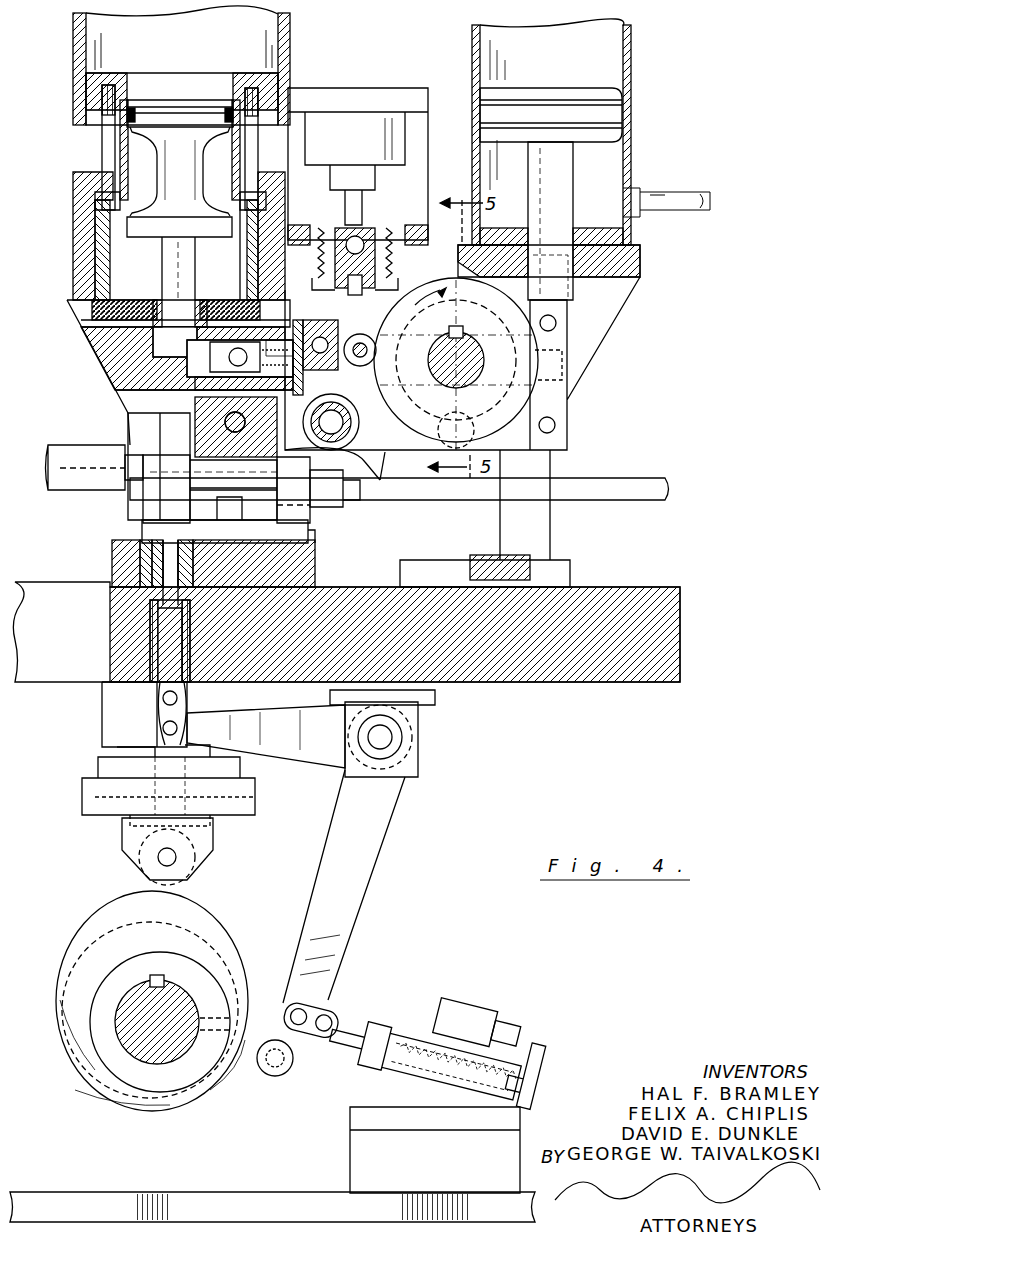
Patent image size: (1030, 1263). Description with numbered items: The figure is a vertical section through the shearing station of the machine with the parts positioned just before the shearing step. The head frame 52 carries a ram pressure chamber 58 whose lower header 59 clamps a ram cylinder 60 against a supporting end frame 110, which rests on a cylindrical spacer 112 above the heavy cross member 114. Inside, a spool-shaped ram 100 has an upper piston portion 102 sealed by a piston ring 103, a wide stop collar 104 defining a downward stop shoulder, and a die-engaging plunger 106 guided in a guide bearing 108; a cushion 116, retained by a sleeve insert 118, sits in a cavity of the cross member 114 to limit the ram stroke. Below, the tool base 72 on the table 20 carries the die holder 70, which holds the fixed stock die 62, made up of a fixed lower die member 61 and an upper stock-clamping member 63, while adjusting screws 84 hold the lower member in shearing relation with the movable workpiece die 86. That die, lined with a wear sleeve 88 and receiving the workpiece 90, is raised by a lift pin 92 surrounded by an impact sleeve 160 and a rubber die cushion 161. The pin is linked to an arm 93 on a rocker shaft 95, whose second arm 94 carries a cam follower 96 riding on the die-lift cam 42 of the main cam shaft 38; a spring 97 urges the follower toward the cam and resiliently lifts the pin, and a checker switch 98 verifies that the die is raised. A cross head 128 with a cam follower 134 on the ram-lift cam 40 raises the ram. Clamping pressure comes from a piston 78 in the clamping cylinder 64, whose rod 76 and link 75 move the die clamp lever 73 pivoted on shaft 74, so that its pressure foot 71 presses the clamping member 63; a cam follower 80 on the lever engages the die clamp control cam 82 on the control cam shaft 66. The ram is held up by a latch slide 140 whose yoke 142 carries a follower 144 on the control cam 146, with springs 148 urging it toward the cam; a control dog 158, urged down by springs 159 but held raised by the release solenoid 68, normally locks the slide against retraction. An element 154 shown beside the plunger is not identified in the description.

The table 20 is at (665, 652).
The main cam shaft 38 is at (160, 1010).
The ram-lift cam 40 is at (210, 917).
The die-lift cam 42 is at (78, 1052).
The head frame 52 is at (535, 507).
The ram pressure chamber 58 is at (258, 40).
The lower header 59 is at (112, 85).
The ram cylinder 60 is at (242, 148).
The fixed lower die member 61 is at (201, 505).
The fixed stock die 62 is at (298, 512).
The upper stock-clamping member 63 is at (288, 457).
The clamping cylinder 64 is at (606, 53).
The control cam shaft 66 is at (466, 370).
The release solenoid 68 is at (366, 154).
The die holder 70 is at (282, 538).
The pressure foot 71 is at (205, 416).
The tool base 72 is at (305, 574).
The die clamp lever 73 is at (350, 452).
The shaft 74 is at (341, 431).
The link 75 is at (555, 407).
The rod 76 is at (558, 186).
The piston 78 is at (565, 123).
The cam follower 80 is at (475, 434).
The die clamp control cam 82 is at (457, 365).
The adjusting screws 84 is at (332, 502).
The movable workpiece die 86 is at (143, 422).
The wear sleeve 88 is at (132, 498).
The workpiece 90 is at (135, 495).
The lift pin 92 is at (165, 598).
The arm 93 is at (277, 744).
The arm 94 is at (368, 837).
The rocker shaft 95 is at (418, 727).
The cam follower 96 is at (293, 1066).
The spring 97 is at (412, 1032).
The checker switch 98 is at (474, 1012).
The ram 100 is at (195, 170).
The piston portion 102 is at (190, 125).
The piston ring 103 is at (228, 108).
The stop collar 104 is at (140, 230).
The die-engaging plunger 106 is at (178, 274).
The guide bearing 108 is at (180, 342).
The end frame 110 is at (88, 188).
The cylindrical spacer 112 is at (90, 238).
The cross member 114 is at (88, 322).
The cushion 116 is at (153, 310).
The sleeve insert 118 is at (252, 250).
The cross head 128 is at (100, 805).
The cam follower 134 is at (145, 862).
The latch slide 140 is at (200, 360).
The yoke 142 is at (297, 320).
The cam follower 144 is at (385, 492).
The control cam 146 is at (433, 295).
The springs 148 is at (310, 370).
The bushing 154 is at (205, 312).
The control dog 158 is at (372, 342).
The springs 159 is at (378, 240).
The impact sleeve 160 is at (130, 552).
The die cushion 161 is at (140, 577).